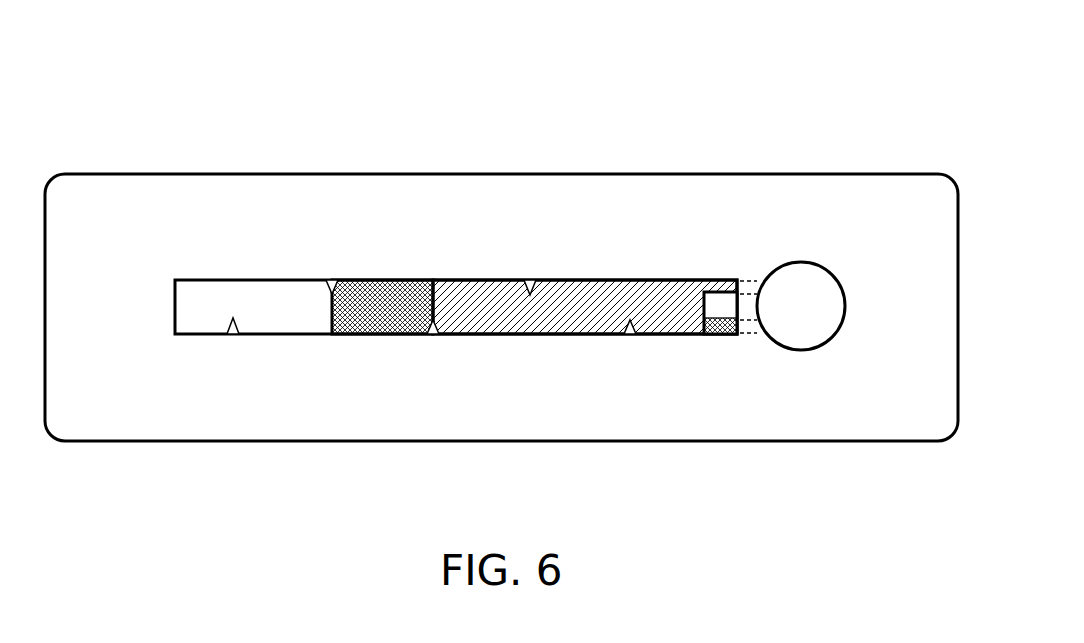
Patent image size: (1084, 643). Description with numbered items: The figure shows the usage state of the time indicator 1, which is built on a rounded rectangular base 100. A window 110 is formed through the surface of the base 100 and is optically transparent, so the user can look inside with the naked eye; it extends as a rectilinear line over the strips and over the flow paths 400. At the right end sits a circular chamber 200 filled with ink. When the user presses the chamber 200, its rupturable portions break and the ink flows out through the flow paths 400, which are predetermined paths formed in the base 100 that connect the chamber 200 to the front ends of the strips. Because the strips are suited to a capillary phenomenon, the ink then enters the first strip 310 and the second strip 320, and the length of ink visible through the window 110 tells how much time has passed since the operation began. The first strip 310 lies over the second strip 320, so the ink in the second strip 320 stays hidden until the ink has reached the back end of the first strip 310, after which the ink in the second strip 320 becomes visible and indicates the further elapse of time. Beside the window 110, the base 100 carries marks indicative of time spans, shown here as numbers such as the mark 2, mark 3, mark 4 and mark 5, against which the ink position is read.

The base 100 is at (740, 162).
The chamber 200 is at (833, 256).
The window 110 is at (398, 279).
The first strip 310 is at (528, 335).
The second strip 320 is at (373, 335).
The flow paths 400 is at (719, 356).
The time indicator 1 is at (628, 347).
The mark 2 is at (530, 266).
The mark 3 is at (431, 347).
The mark 4 is at (330, 265).
The mark 5 is at (233, 346).